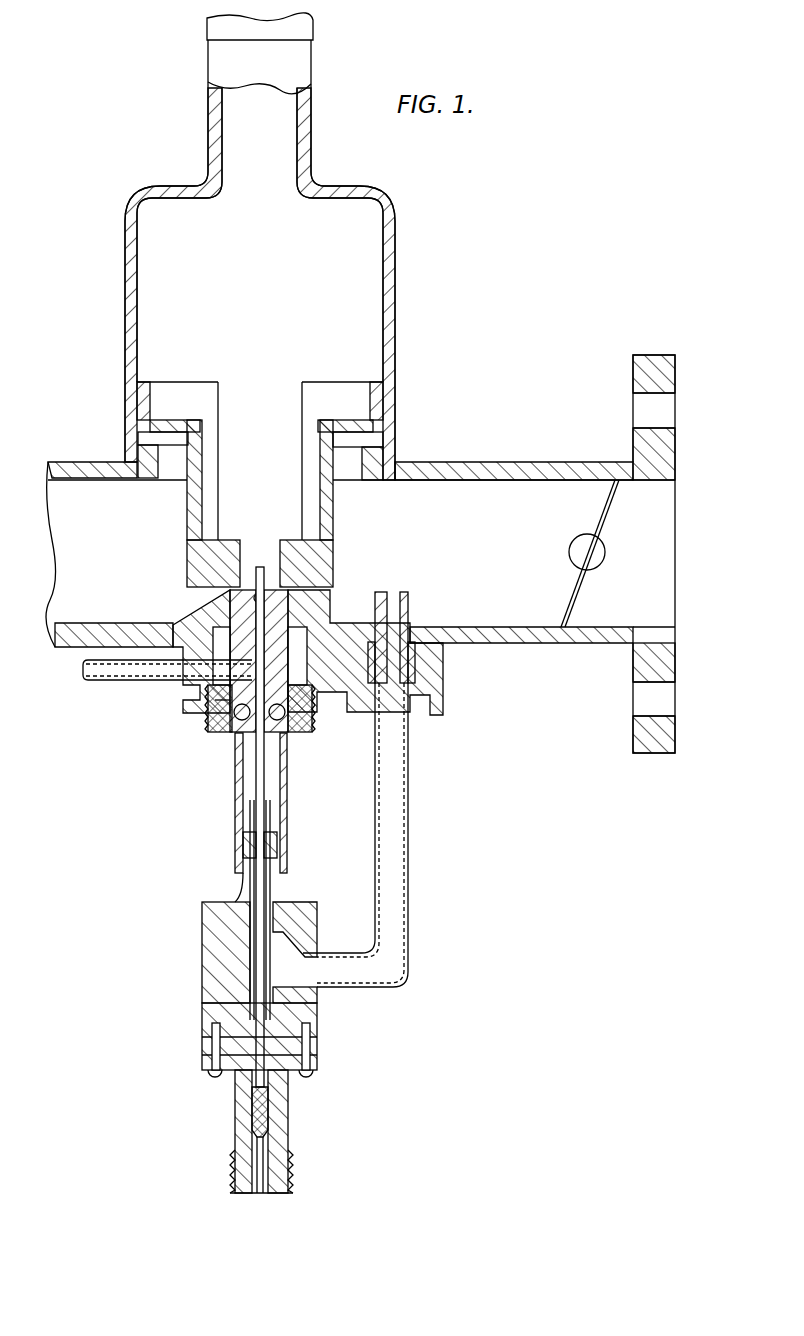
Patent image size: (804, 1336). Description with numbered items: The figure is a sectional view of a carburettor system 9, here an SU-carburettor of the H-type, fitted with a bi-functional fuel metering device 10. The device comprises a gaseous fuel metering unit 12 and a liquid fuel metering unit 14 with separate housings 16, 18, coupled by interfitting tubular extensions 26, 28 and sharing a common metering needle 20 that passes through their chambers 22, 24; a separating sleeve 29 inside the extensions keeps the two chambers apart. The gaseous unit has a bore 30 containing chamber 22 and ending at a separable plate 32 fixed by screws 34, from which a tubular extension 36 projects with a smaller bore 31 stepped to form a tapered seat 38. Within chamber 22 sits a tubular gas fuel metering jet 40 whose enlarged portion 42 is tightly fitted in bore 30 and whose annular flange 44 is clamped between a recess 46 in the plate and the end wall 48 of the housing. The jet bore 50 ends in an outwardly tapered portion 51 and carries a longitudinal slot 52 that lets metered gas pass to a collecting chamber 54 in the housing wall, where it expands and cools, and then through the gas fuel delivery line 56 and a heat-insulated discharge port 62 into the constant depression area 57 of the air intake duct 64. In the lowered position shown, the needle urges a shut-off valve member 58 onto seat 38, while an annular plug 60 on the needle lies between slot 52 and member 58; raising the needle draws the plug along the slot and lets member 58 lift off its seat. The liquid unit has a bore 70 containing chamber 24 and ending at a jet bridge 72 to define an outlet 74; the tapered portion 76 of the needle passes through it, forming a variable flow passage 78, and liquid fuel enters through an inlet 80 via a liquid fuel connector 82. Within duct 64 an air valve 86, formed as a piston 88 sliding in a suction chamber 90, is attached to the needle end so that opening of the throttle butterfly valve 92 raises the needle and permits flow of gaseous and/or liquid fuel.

The system 9 is at (125, 782).
The fuel metering device 10 is at (220, 819).
The gaseous fuel metering unit 12 is at (182, 931).
The liquid fuel metering unit 14 is at (170, 699).
The housing 16 is at (210, 958).
The housing 18 is at (216, 733).
The metering needle 20 is at (266, 778).
The chamber 22 is at (250, 1082).
The chamber 24 is at (292, 650).
The tubular extension 26 is at (283, 886).
The tubular extension 28 is at (235, 778).
The separating sleeve 29 is at (277, 843).
The bore 30 is at (268, 918).
The bore 31 is at (290, 1175).
The separable plate 32 is at (287, 1052).
The screws 34 is at (212, 1072).
The tubular extension 36 is at (270, 1135).
The tapered seat 38 is at (282, 1155).
The gas fuel metering jet 40 is at (295, 1062).
The portion of enlarged outer diameter 42 is at (245, 1012).
The annular flange 44 is at (214, 1055).
The recess 46 is at (222, 1080).
The end wall 48 is at (228, 1047).
The bore 50 is at (240, 902).
The outwardly tapered portion 51 is at (312, 1074).
The longitudinal slot 52 is at (300, 950).
The collecting chamber 54 is at (292, 988).
The gas fuel delivery line 56 is at (408, 883).
The constant depression area 57 is at (479, 567).
The shut-off valve member 58 is at (256, 1105).
The annular plug 60 is at (302, 1015).
The discharge port 62 is at (410, 622).
The air intake duct 64 is at (512, 637).
The bore 70 is at (300, 730).
The jet bridge 72 is at (268, 596).
The outlet 74 is at (240, 598).
The tapered portion 76 is at (215, 702).
The variable flow passage 78 is at (245, 610).
The inlet 80 is at (128, 668).
The liquid fuel connector 82 is at (87, 672).
The air valve 86 is at (388, 323).
The piston 88 is at (220, 548).
The suction chamber 90 is at (275, 290).
The throttle butterfly valve 92 is at (603, 496).